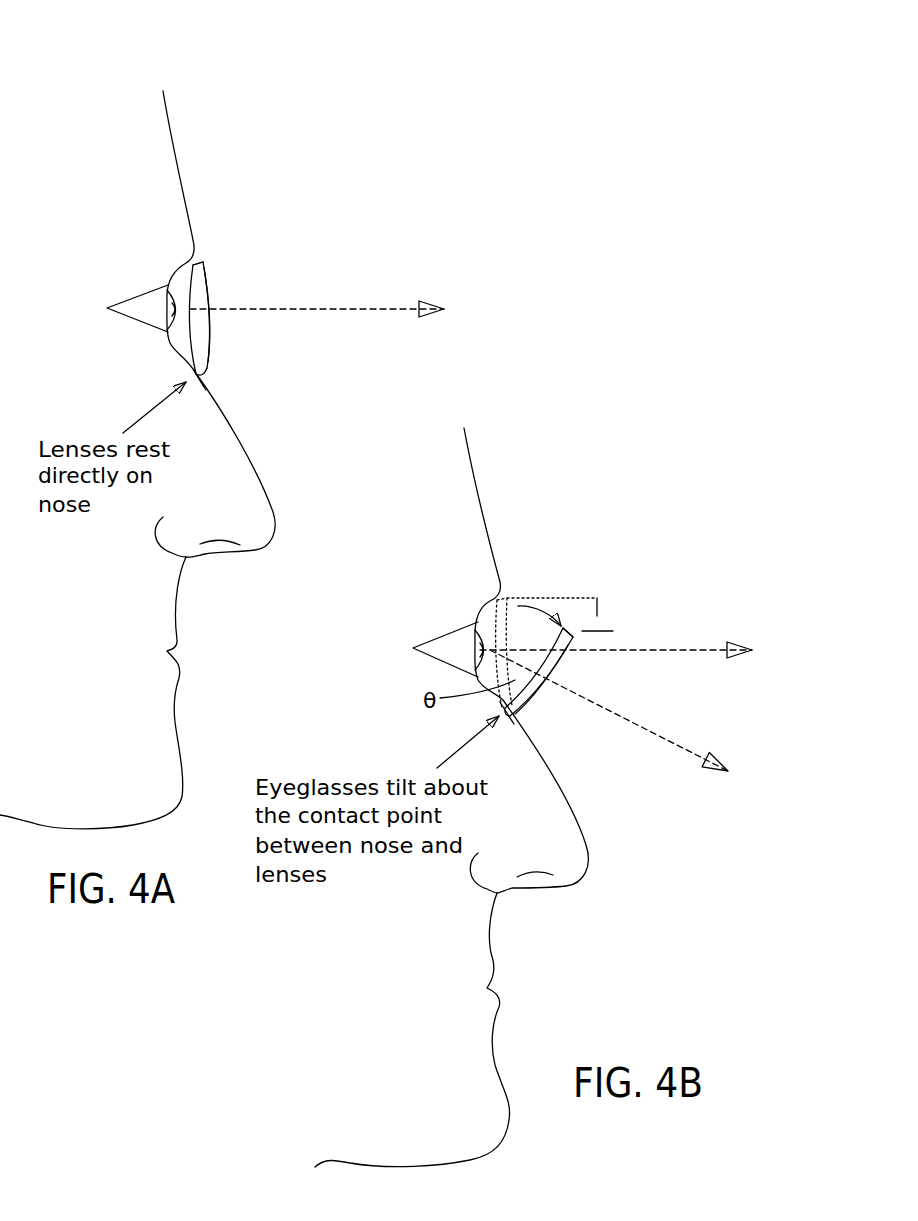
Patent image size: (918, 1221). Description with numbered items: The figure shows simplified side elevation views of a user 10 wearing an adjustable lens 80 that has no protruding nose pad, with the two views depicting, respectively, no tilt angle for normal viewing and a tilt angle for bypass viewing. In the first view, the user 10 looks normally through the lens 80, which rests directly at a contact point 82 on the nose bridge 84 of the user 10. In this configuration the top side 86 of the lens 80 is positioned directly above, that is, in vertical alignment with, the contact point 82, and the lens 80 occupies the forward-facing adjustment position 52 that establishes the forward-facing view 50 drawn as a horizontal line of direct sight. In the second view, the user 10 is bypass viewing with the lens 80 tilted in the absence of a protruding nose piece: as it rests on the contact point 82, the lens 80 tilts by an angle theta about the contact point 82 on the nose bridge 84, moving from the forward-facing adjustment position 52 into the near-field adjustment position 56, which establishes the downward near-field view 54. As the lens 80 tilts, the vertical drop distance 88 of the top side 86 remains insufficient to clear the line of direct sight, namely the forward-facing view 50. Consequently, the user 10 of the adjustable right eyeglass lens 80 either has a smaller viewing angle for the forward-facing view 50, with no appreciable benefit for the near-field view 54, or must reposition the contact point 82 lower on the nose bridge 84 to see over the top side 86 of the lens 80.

In FIG. 4A, the user 10 is at (172, 112).
In FIG. 4B, the user 10 is at (472, 450).
In FIG. 4A, the forward-facing view 50 is at (363, 310).
In FIG. 4B, the forward-facing view 50 is at (685, 650).
In FIG. 4A, the forward-facing adjustment position 52 is at (214, 340).
In FIG. 4B, the near-field view 54 is at (673, 743).
In FIG. 4B, the near-field adjustment position 56 is at (565, 664).
In FIG. 4A, the lens 80 is at (208, 287).
In FIG. 4B, the lens 80 is at (540, 692).
In FIG. 4A, the contact point 82 is at (200, 369).
In FIG. 4A, the nose bridge 84 is at (203, 387).
In FIG. 4B, the nose bridge 84 is at (520, 728).
In FIG. 4A, the top side 86 is at (198, 262).
In FIG. 4B, the top side 86 is at (578, 616).
In FIG. 4B, the vertical drop distance 88 is at (594, 626).